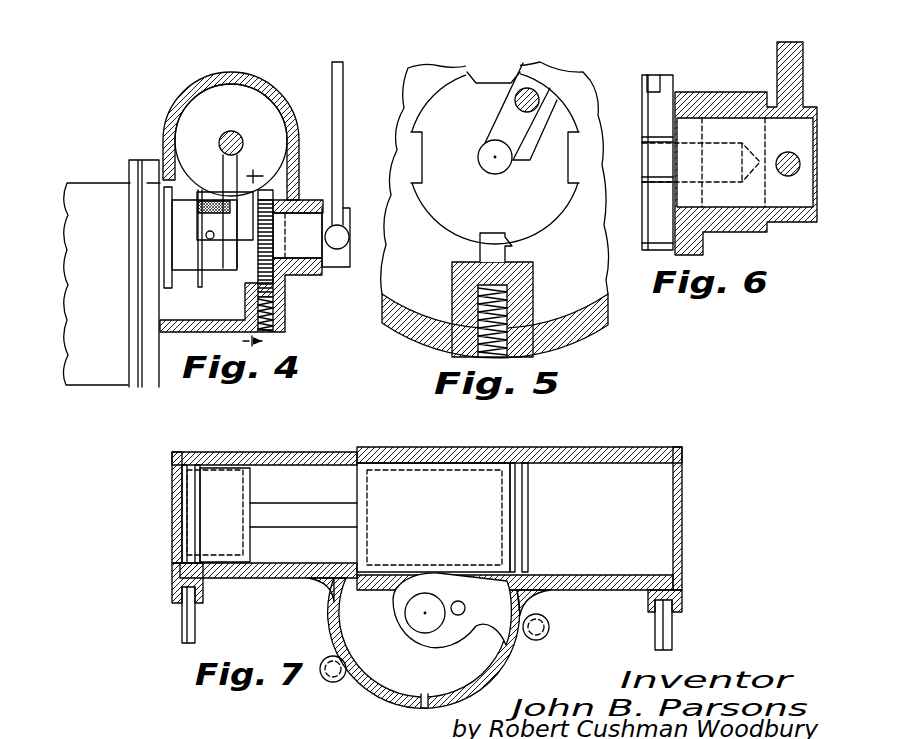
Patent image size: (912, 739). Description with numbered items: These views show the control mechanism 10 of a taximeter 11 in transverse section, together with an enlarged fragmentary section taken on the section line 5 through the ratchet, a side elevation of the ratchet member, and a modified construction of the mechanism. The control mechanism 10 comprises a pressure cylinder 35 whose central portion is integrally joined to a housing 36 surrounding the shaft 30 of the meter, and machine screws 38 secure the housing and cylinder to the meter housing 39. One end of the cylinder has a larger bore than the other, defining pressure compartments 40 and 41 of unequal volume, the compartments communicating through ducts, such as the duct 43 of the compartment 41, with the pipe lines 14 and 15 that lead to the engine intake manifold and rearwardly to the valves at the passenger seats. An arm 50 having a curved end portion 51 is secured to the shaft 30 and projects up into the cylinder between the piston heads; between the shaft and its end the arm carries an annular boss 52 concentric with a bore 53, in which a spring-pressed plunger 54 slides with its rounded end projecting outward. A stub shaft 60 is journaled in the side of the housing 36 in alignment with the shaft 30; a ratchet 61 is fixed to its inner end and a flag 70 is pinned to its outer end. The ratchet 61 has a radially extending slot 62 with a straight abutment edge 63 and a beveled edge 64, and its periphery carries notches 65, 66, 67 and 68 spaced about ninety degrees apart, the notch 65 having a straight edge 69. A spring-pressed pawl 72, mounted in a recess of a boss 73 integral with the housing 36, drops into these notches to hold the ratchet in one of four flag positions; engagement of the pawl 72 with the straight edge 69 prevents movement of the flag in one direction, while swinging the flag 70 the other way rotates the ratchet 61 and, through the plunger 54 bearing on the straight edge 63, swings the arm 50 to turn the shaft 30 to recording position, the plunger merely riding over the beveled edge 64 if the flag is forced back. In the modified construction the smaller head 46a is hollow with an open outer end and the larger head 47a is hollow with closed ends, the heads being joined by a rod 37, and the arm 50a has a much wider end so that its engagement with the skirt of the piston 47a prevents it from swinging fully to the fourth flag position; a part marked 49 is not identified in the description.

In FIG. 4, the control mechanism 10 is at (165, 98).
In FIG. 4, the taximeter 11 is at (85, 181).
In FIG. 4, the cylinder 35 is at (256, 80).
In FIG. 7, the cylinder 35 is at (437, 444).
In FIG. 4, the flag 70 is at (332, 97).
In FIG. 6, the flag 70 is at (791, 55).
In FIG. 4, the curved end portion 51 is at (229, 154).
In FIG. 4, the section line 5 is at (262, 251).
In FIG. 4, the spring-pressed plunger 54 is at (278, 199).
In FIG. 5, the spring-pressed plunger 54 is at (540, 118).
In FIG. 4, the bore 53 is at (275, 210).
In FIG. 4, the annular boss 52 is at (250, 215).
In FIG. 4, the arm 50 is at (215, 258).
In FIG. 4, the ratchet 61 is at (262, 262).
In FIG. 5, the ratchet 61 is at (548, 205).
In FIG. 6, the ratchet 61 is at (661, 108).
In FIG. 4, the housing 36 is at (283, 302).
In FIG. 5, the housing 36 is at (590, 318).
In FIG. 7, the housing 36 is at (427, 700).
In FIG. 4, the stub shaft 60 is at (312, 252).
In FIG. 6, the stub shaft 60 is at (760, 127).
In FIG. 4, the meter housing 39 is at (152, 372).
In FIG. 5, the notch 67 is at (488, 82).
In FIG. 5, the slot 62 is at (528, 88).
In FIG. 6, the slot 62 is at (655, 88).
In FIG. 5, the straight edge 63 is at (510, 116).
In FIG. 6, the straight edge 63 is at (656, 78).
In FIG. 5, the notch 66 is at (408, 165).
In FIG. 5, the shaft 30 is at (488, 162).
In FIG. 5, the beveled edge 64 is at (532, 141).
In FIG. 5, the notch 68 is at (583, 141).
In FIG. 6, the notch 68 is at (652, 162).
In FIG. 5, the straight edge 69 is at (481, 235).
In FIG. 5, the notch 65 is at (504, 240).
In FIG. 5, the pawl 72 is at (505, 262).
In FIG. 5, the boss 73 is at (518, 296).
In FIG. 7, the smaller piston head 46a is at (219, 480).
In FIG. 7, the larger piston head 47a is at (472, 478).
In FIG. 7, the pressure compartment 41 is at (655, 488).
In FIG. 7, the pressure compartment 40 is at (182, 495).
In FIG. 7, the duct 43 is at (197, 538).
In FIG. 7, the rod 37 is at (297, 499).
In FIG. 7, the arm 50a is at (472, 588).
In FIG. 7, the pipe line 14 is at (180, 627).
In FIG. 7, the pipe line 15 is at (675, 629).
In FIG. 7, the machine screws 38 is at (322, 652).
In FIG. 7, the slot 49 is at (424, 707).